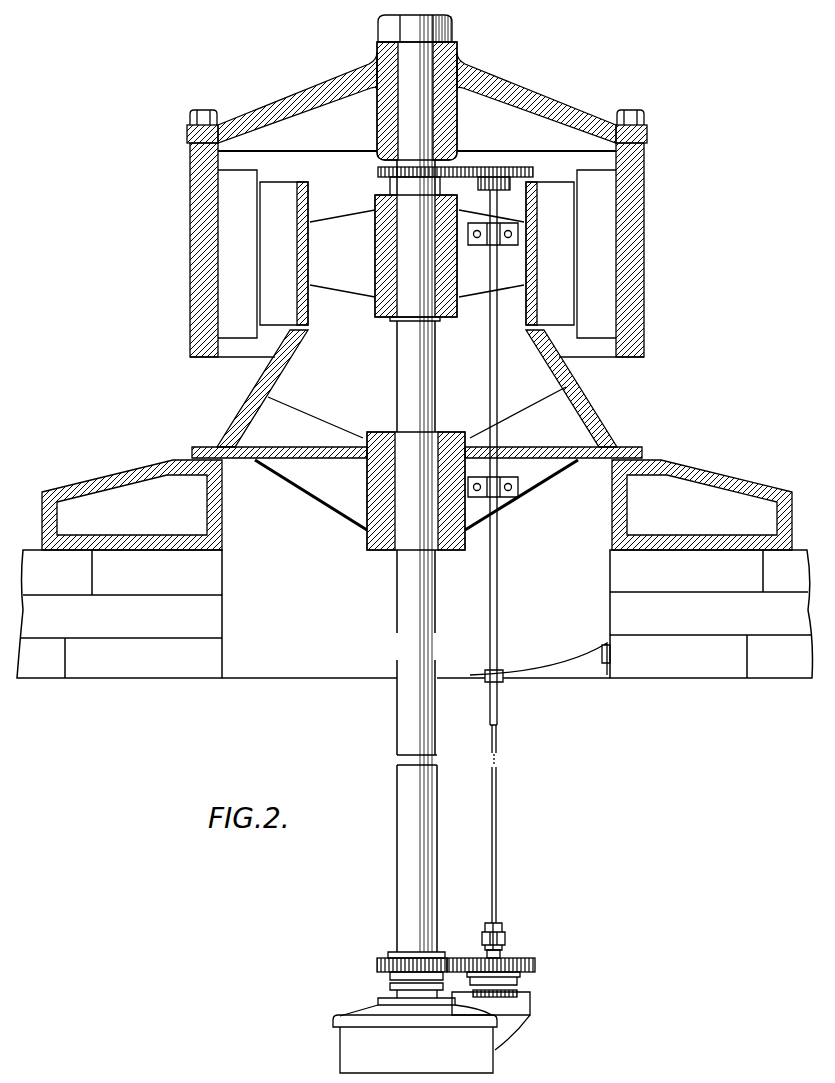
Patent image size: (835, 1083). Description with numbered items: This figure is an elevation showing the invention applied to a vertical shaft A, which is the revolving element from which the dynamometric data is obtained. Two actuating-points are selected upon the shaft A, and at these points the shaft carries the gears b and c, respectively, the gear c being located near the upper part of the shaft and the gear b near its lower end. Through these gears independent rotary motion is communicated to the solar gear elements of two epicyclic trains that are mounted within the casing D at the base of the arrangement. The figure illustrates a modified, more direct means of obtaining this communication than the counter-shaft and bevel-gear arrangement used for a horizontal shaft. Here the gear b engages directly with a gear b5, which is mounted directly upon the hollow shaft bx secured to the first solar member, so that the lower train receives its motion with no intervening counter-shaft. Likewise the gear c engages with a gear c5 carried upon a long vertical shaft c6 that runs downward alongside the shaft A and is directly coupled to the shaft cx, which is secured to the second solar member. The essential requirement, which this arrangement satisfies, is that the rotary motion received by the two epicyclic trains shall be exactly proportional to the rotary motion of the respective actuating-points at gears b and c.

The shaft A is at (407, 398).
The gear c is at (378, 172).
The gear c5 is at (507, 167).
The shaft c6 is at (498, 866).
The shaft cx is at (502, 948).
The hollow shaft bx is at (487, 960).
The gear b is at (377, 966).
The gear b5 is at (535, 965).
The casing D is at (527, 983).